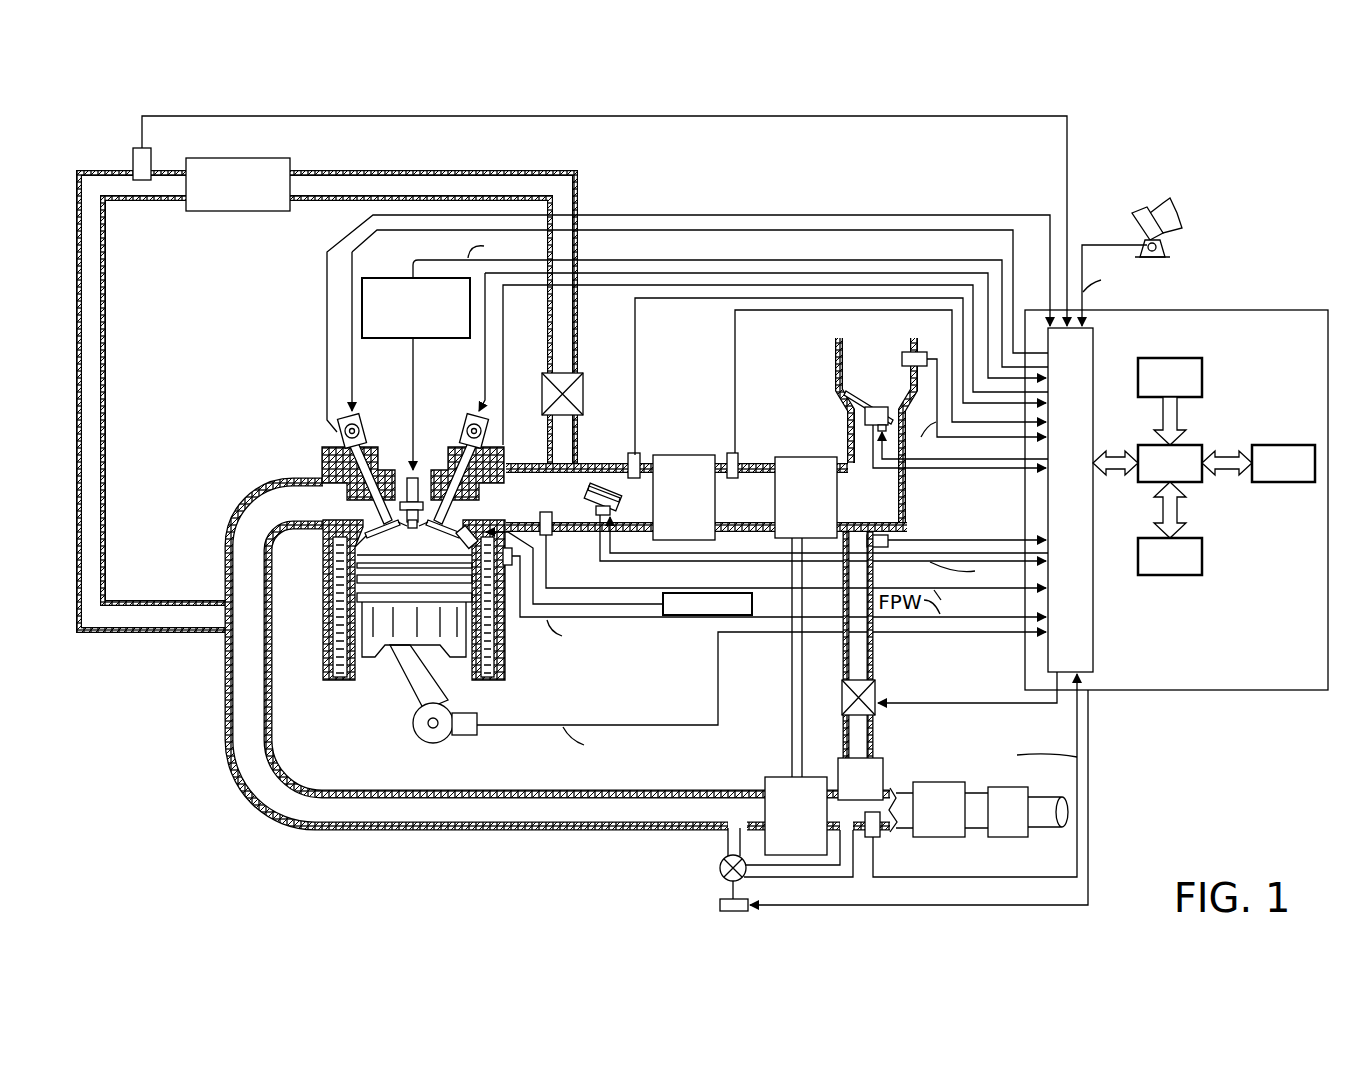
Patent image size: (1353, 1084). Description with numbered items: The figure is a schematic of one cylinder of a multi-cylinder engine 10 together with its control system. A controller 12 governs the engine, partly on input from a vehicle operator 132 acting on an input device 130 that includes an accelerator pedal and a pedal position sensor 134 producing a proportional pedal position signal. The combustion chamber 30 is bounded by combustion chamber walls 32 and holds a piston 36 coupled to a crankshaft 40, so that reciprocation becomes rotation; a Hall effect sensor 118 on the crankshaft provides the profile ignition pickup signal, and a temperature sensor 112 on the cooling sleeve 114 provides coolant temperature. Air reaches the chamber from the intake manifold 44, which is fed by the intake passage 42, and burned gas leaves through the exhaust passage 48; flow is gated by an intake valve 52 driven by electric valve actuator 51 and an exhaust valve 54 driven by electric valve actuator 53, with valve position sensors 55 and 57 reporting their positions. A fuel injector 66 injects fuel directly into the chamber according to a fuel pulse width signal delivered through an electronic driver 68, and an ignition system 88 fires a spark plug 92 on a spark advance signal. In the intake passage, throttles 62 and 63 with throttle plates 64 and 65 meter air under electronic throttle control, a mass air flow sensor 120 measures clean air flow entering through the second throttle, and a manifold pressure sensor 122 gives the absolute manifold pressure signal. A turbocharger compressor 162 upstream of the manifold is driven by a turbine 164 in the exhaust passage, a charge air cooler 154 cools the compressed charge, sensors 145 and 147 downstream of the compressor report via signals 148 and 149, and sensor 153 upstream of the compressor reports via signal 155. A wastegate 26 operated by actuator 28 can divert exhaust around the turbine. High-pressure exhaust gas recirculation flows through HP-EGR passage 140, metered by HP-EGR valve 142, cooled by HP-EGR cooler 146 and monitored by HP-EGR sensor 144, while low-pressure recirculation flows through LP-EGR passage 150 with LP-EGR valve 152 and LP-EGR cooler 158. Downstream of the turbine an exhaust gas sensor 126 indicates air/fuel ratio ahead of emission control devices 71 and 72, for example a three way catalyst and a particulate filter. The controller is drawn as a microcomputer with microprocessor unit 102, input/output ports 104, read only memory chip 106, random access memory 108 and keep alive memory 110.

The engine 10 is at (258, 404).
The controller 12 is at (1230, 310).
The wastegate 26 is at (720, 863).
The actuator 28 is at (718, 904).
The combustion chamber 30 is at (388, 542).
The combustion chamber walls 32 is at (362, 667).
The piston 36 is at (398, 632).
The crankshaft 40 is at (426, 743).
The intake passage 42 is at (876, 430).
The intake manifold 44 is at (706, 497).
The exhaust passage 48 is at (559, 654).
The electric valve actuator 51 is at (472, 412).
The intake valve 52 is at (455, 524).
The electric valve actuator 53 is at (355, 413).
The exhaust valve 54 is at (340, 480).
The valve position sensor 55 is at (498, 452).
The valve position sensor 57 is at (338, 433).
The throttle 62 is at (591, 485).
The throttle 63 is at (842, 387).
The throttle plate 64 is at (589, 494).
The throttle plate 65 is at (864, 414).
The fuel injector 66 is at (456, 545).
The electronic driver 68 is at (752, 604).
The emission control device 71 is at (930, 809).
The emission control device 72 is at (1016, 812).
The ignition system 88 is at (383, 278).
The spark plug 92 is at (414, 475).
The microprocessor unit 102 is at (1196, 445).
The input/output ports 104 is at (1095, 340).
The read only memory chip 106 is at (1203, 378).
The random access memory 108 is at (1175, 576).
The keep alive memory 110 is at (1290, 483).
The temperature sensor 112 is at (508, 566).
The cooling sleeve 114 is at (503, 650).
The Hall effect sensor 118 is at (477, 735).
The mass air flow sensor 120 is at (904, 352).
The manifold pressure sensor 122 is at (543, 512).
The exhaust gas sensor 126 is at (880, 837).
The input device 130 is at (1132, 226).
The vehicle operator 132 is at (1182, 208).
The pedal position sensor 134 is at (1165, 247).
The HP-EGR passage 140 is at (490, 172).
The HP-EGR valve 142 is at (583, 397).
The HP-EGR sensor 144 is at (135, 148).
The sensor 145 is at (738, 455).
The HP-EGR cooler 146 is at (238, 184).
The sensor 147 is at (640, 455).
The signal 148 is at (735, 373).
The signal 149 is at (635, 373).
The LP-EGR passage 150 is at (876, 667).
The LP-EGR valve 152 is at (842, 700).
The sensor 153 is at (868, 535).
The charge air cooler 154 is at (684, 497).
The signal 155 is at (930, 540).
The LP-EGR cooler 158 is at (860, 779).
The compressor 162 is at (806, 617).
The turbine 164 is at (796, 816).